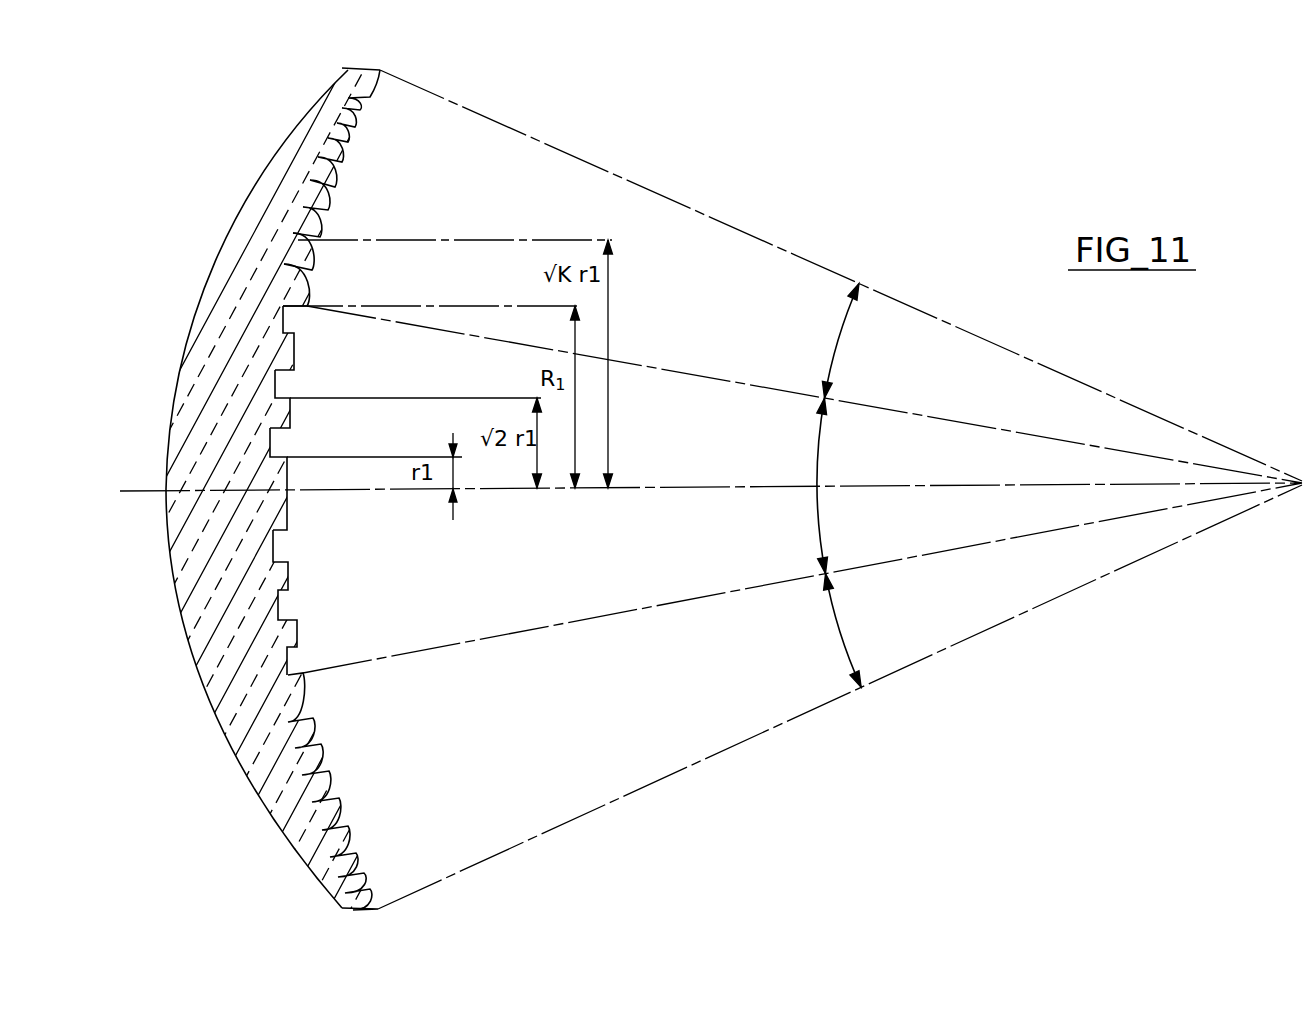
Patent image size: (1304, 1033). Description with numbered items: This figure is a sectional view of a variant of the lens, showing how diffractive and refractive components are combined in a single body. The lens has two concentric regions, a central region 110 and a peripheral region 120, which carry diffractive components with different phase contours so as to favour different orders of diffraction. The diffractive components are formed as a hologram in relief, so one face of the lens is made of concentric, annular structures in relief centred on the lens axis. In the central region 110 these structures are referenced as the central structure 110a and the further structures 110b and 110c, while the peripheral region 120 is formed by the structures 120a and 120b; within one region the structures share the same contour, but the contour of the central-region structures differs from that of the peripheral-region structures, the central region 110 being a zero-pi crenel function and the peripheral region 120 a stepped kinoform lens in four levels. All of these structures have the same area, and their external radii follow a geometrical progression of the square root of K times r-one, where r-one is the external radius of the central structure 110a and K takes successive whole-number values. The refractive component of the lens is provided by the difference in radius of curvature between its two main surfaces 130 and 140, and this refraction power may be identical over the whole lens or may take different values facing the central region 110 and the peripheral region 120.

The central region 110 is at (792, 485).
The central structure 110a is at (306, 475).
The structure in relief of the central region 110b is at (306, 412).
The structure in relief of the central region 110c is at (314, 356).
The peripheral region 120 is at (814, 486).
The structure in relief of the peripheral region 120a is at (322, 286).
The structure in relief of the peripheral region 120b is at (331, 251).
The main surface 130 is at (352, 811).
The main surface 140 is at (222, 237).